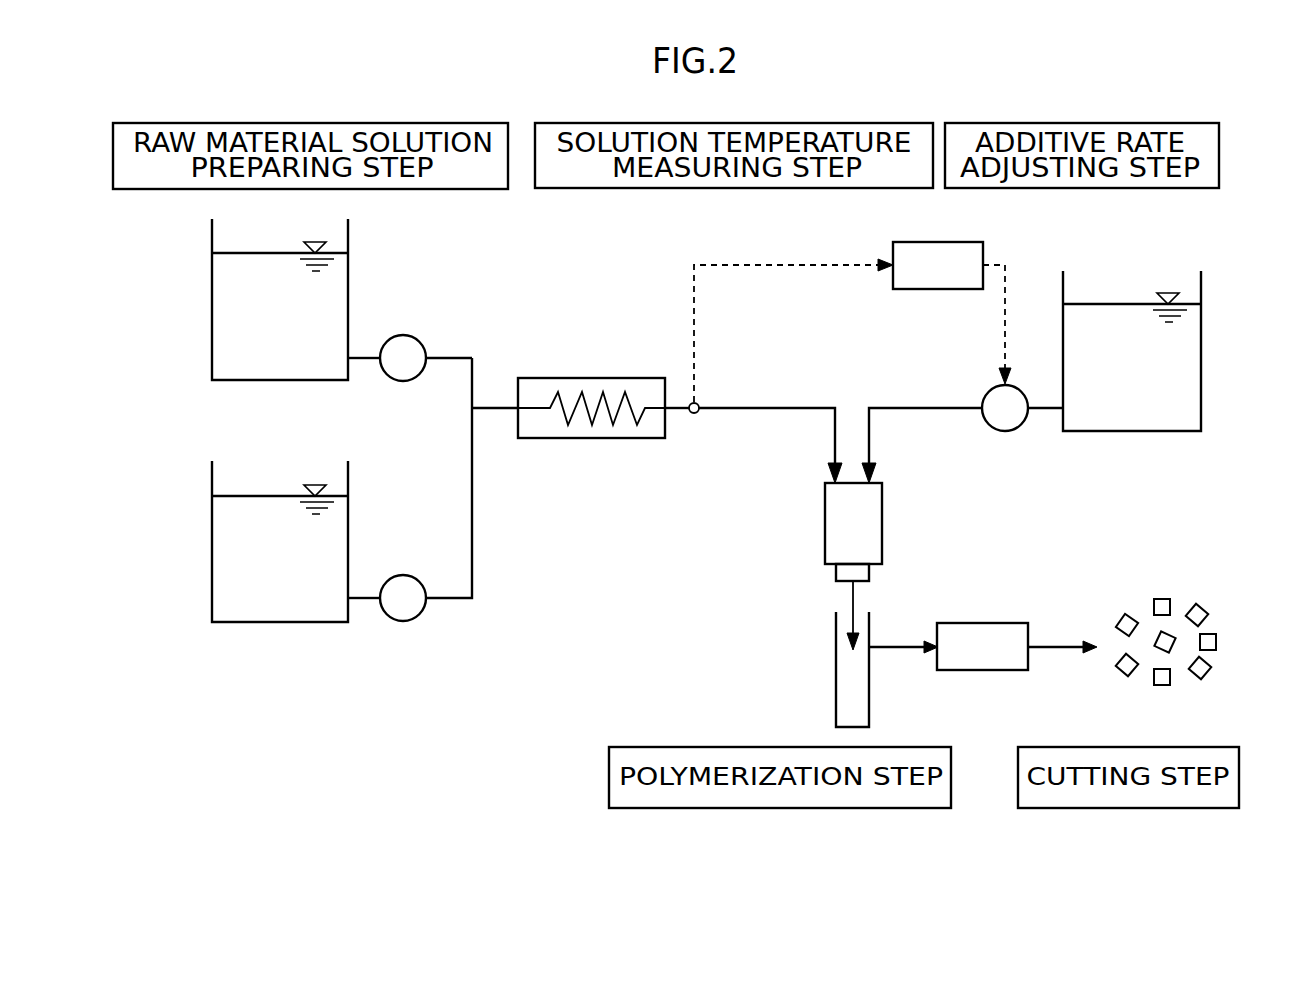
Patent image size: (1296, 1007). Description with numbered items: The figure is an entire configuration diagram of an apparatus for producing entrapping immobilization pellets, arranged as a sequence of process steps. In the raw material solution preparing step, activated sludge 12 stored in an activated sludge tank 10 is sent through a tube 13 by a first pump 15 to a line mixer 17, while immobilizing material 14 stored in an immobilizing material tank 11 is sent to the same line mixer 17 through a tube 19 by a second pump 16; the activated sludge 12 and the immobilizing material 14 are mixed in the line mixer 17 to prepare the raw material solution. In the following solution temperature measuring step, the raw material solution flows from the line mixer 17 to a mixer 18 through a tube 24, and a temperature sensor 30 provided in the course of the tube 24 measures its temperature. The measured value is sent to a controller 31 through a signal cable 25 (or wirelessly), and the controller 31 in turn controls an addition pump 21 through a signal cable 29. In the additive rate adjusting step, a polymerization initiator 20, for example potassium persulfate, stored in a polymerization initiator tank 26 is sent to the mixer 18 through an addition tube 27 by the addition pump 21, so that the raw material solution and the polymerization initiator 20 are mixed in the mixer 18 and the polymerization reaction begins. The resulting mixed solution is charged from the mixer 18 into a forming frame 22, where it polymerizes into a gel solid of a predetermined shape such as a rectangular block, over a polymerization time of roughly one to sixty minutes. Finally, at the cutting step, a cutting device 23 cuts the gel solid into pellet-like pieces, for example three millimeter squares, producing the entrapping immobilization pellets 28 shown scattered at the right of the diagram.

The activated sludge tank 10 is at (212, 299).
The immobilizing material tank 11 is at (212, 541).
The activated sludge 12 is at (265, 335).
The tube 13 is at (453, 358).
The immobilizing material 14 is at (265, 578).
The first pump 15 is at (403, 335).
The second pump 16 is at (403, 621).
The line mixer 17 is at (592, 378).
The mixer 18 is at (825, 523).
The tube 19 is at (473, 497).
The polymerization initiator 20 is at (1115, 383).
The addition pump 21 is at (990, 395).
The forming frame 22 is at (835, 668).
The cutting device 23 is at (985, 623).
The tube 24 is at (772, 409).
The signal cable 25 is at (768, 265).
The polymerization initiator tank 26 is at (1202, 335).
The addition tube 27 is at (937, 410).
The entrapping immobilization pellets 28 is at (1205, 608).
The signal cable 29 is at (1005, 320).
The temperature sensor 30 is at (700, 402).
The controller 31 is at (937, 242).